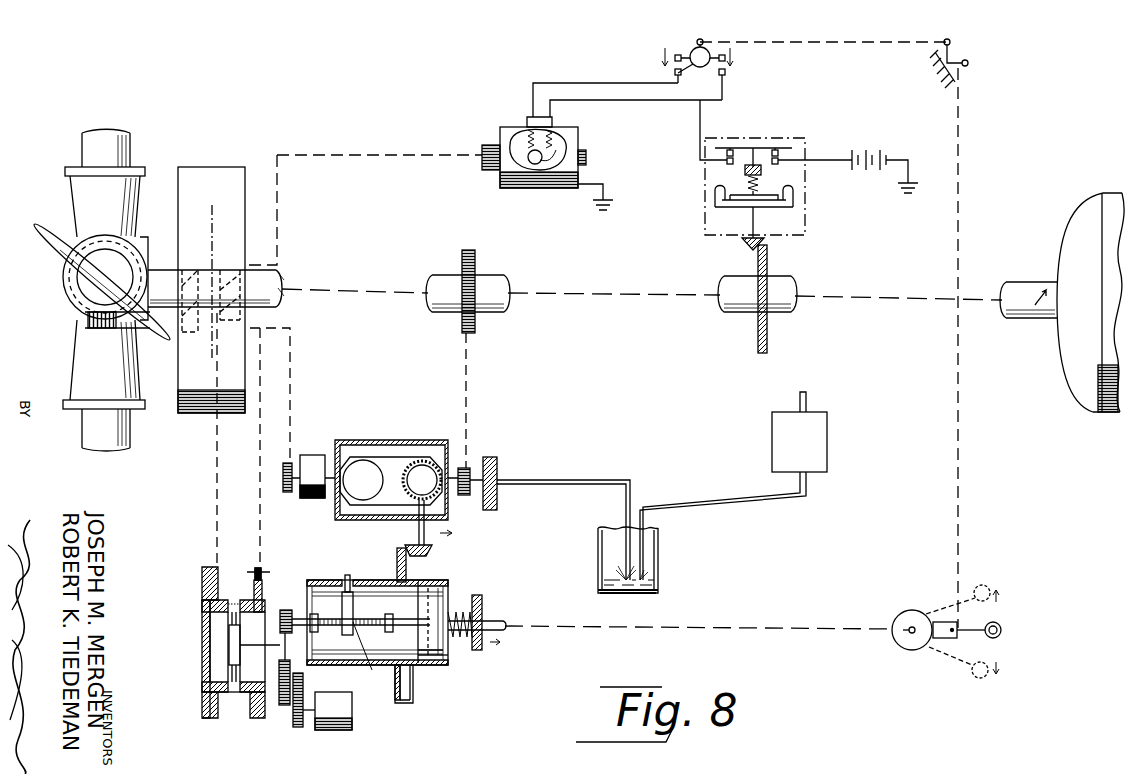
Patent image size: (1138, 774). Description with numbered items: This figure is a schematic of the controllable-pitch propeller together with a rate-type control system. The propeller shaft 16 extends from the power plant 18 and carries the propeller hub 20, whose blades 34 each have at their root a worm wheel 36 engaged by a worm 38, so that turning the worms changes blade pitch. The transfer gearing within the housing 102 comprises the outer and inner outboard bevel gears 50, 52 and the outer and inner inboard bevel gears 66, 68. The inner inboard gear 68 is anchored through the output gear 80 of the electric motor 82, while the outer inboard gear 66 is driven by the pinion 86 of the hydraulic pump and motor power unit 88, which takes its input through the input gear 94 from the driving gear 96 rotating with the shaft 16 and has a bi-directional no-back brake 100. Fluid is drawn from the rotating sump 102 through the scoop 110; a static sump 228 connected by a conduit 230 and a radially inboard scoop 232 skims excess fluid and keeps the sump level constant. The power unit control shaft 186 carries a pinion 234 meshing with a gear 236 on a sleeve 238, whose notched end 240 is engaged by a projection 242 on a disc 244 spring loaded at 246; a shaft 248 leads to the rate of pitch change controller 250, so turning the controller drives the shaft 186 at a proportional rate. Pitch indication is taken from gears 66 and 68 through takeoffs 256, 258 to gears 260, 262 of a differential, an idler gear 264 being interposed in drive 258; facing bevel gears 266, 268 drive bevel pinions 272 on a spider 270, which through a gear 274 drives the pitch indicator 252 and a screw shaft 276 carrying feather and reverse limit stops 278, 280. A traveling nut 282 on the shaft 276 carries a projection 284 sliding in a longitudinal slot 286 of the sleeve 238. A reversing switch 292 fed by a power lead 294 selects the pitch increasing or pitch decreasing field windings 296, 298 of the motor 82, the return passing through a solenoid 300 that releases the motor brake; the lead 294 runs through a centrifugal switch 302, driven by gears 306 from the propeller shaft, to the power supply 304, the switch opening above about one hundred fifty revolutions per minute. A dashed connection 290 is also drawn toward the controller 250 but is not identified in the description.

The propeller shaft 16 is at (275, 284).
The power plant 18 is at (1074, 217).
The propeller hub 20 is at (148, 242).
The propeller blade 34 is at (126, 142).
The worm wheel 36 is at (90, 246).
The worm 38 is at (90, 330).
The outer outboard bevel gear 50 is at (192, 256).
The inner outboard bevel gear 52 is at (195, 265).
The outer inboard bevel gear 66 is at (240, 252).
The inner inboard bevel gear 68 is at (235, 270).
The motor output gear 80 is at (491, 146).
The electric motor 82 is at (548, 190).
The driving pinion 86 is at (288, 463).
The hydraulic pump and motor power unit 88 is at (407, 435).
The input gear 94 is at (472, 468).
The driving gear 96 is at (475, 318).
The bi-directional no-back brake 100 is at (315, 458).
The housing and rotating sump 102 is at (208, 414).
The scoop 110 is at (631, 480).
The power unit control shaft 186 is at (418, 516).
The static sump 228 is at (828, 436).
The conduit 230 is at (748, 519).
The scoop 232 is at (658, 570).
The pinion 234 is at (435, 552).
The gear 236 is at (400, 703).
The sleeve 238 is at (430, 665).
The notched end 240 is at (432, 606).
The projection 242 is at (476, 650).
The disc 244 is at (448, 663).
The spring 246 is at (465, 610).
The shaft 248 is at (494, 623).
The rate of pitch change controller 250 is at (925, 650).
The pitch indicator 252 is at (336, 730).
The gear takeoff 256 is at (215, 531).
The gear takeoff drive 258 is at (260, 532).
The gear 260 is at (203, 580).
The gear 262 is at (262, 604).
The idler gear 264 is at (259, 572).
The bevel gear 266 is at (228, 603).
The bevel gear 268 is at (244, 604).
The spider 270 is at (228, 647).
The bevel pinions 272 is at (234, 692).
The gear 274 is at (292, 655).
The screw shaft 276 is at (380, 604).
The feather pitch limit stop 278 is at (316, 632).
The reverse pitch limit stop 280 is at (389, 632).
The traveling nut 282 is at (371, 657).
The projection 284 is at (347, 576).
The longitudinal slot 286 is at (396, 580).
The linkage 290 is at (961, 408).
The electrical reversing switch 292 is at (712, 70).
The power lead 294 is at (701, 124).
The pitch increasing field winding 296 is at (527, 131).
The pitch decreasing field winding 298 is at (550, 129).
The solenoid 300 is at (586, 157).
The centrifugal switch 302 is at (820, 128).
The power supply 304 is at (895, 142).
The gears 306 is at (757, 254).